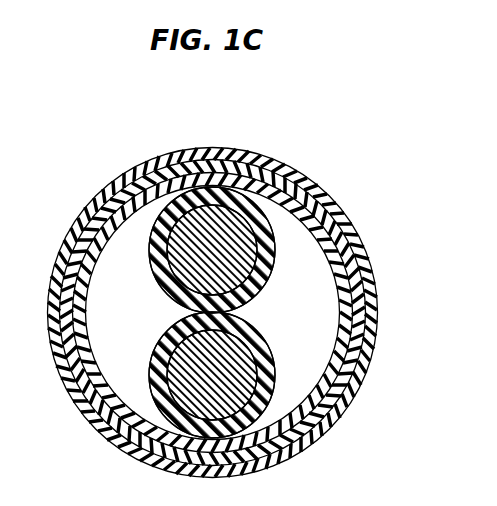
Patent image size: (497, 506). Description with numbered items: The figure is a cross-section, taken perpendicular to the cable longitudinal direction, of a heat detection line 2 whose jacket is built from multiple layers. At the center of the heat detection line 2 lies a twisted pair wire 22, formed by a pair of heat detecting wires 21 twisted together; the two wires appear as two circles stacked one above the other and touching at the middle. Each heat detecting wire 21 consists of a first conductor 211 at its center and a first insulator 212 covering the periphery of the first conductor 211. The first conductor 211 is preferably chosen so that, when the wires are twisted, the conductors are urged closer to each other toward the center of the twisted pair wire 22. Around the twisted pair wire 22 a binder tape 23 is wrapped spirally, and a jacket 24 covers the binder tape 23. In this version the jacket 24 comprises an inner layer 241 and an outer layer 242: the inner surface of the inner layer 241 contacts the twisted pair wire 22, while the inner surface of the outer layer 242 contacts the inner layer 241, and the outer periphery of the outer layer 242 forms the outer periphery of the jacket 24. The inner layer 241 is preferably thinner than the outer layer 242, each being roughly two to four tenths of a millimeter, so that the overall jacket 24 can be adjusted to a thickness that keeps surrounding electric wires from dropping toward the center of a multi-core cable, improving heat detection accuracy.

The heat detection line 2 is at (82, 145).
The heat detecting wire 21 is at (295, 287).
The first conductor 211 is at (248, 232).
The first insulator 212 is at (255, 212).
The twisted pair wire 22 is at (266, 307).
The binder tape 23 is at (358, 343).
The jacket 24 is at (247, 312).
The inner layer 241 is at (330, 398).
The outer layer 242 is at (318, 425).